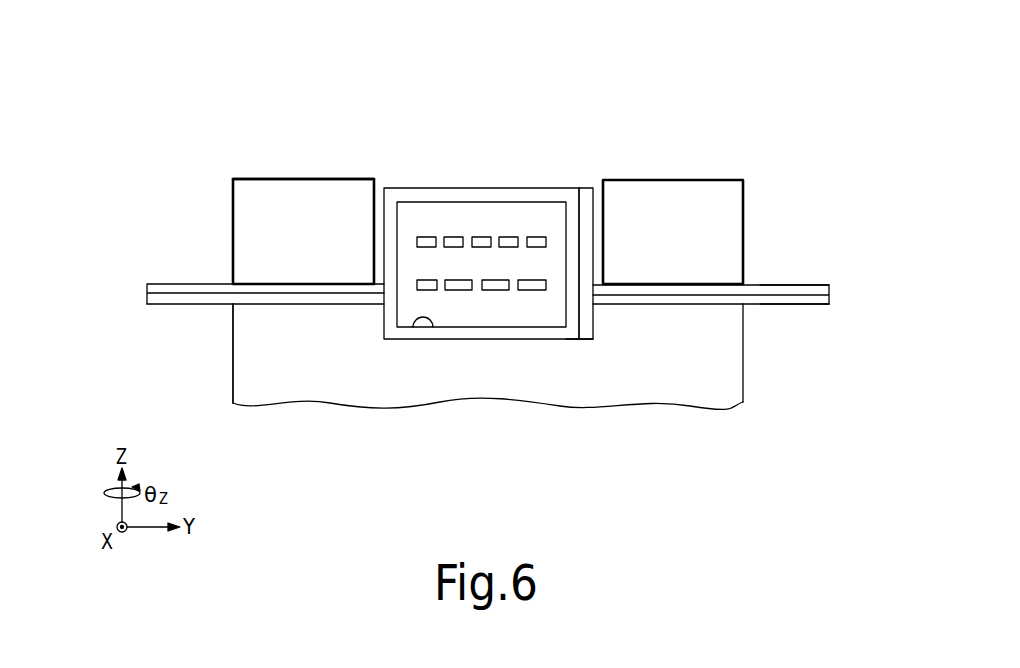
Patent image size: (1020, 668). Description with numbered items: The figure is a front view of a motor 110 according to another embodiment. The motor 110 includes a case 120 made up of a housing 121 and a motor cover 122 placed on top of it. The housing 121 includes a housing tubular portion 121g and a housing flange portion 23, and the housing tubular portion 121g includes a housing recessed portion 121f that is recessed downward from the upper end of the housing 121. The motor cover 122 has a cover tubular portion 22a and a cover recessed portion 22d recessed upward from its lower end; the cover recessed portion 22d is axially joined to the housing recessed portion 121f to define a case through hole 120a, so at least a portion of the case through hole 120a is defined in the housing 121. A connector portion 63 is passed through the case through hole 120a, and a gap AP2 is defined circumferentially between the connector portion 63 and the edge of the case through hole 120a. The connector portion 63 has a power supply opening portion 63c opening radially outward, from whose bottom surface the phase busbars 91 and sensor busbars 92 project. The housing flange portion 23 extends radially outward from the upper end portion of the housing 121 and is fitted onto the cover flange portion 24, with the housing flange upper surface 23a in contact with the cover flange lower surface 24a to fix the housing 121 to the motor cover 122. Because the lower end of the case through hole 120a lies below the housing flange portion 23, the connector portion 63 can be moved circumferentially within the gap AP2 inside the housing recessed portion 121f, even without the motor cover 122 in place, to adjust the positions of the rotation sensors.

The motor 110 is at (826, 94).
The case 120 is at (72, 180).
The housing 121 is at (222, 352).
The housing recessed portion 121f is at (592, 331).
The housing tubular portion 121g is at (254, 345).
The motor cover 122 is at (222, 230).
The cover tubular portion 22a is at (255, 203).
The cover recessed portion 22d is at (385, 225).
The case through hole 120a is at (590, 241).
The housing flange portion 23 is at (829, 301).
The housing flange upper surface 23a is at (798, 296).
The cover flange portion 24 is at (829, 288).
The cover flange lower surface 24a is at (775, 294).
The connector portion 63 is at (573, 225).
The power supply opening portion 63c is at (433, 328).
The phase busbars 91 is at (532, 291).
The sensor busbars 92 is at (427, 282).
The gap AP2 is at (588, 290).